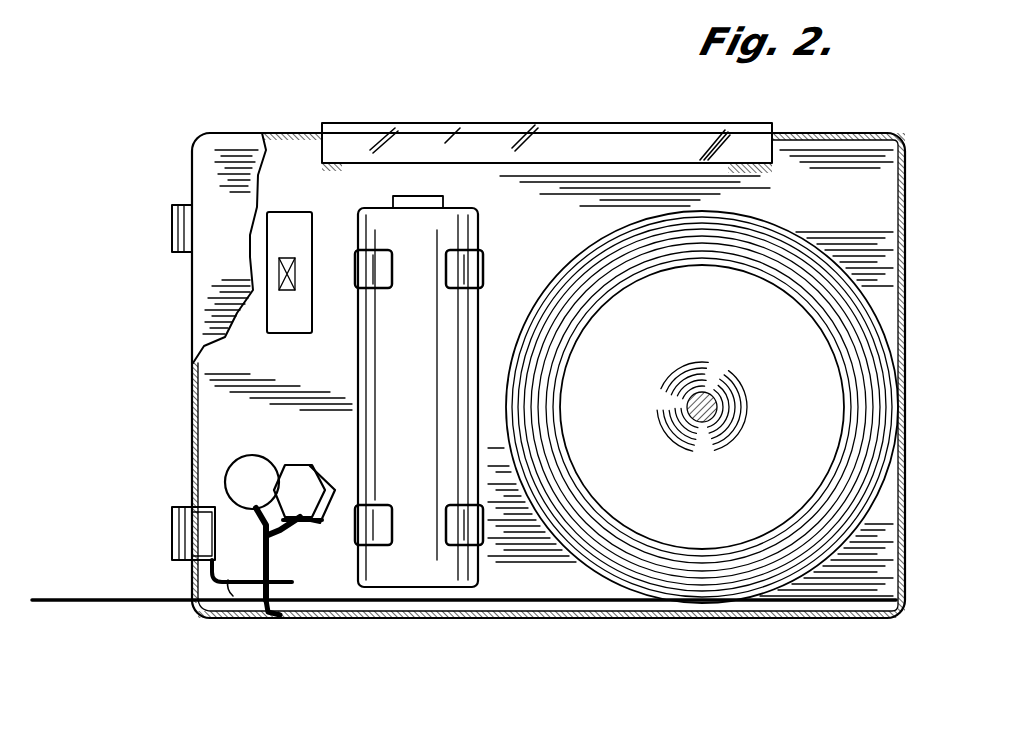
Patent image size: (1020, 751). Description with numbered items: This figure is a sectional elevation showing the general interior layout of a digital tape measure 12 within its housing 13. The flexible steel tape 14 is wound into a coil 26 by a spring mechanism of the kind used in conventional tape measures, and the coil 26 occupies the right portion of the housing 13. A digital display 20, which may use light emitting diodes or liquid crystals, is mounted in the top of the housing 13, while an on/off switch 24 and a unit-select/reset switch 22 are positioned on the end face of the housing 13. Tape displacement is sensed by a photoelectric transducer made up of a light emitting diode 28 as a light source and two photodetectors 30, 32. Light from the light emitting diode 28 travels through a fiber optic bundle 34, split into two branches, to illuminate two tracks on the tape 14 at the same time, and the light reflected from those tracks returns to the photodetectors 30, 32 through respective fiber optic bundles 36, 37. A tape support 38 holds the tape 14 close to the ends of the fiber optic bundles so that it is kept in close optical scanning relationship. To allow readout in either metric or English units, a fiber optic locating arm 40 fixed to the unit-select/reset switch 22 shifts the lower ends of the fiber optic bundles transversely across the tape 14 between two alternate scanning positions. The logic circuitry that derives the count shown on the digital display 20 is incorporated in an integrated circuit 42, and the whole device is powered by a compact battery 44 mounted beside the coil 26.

The measuring device assembly 12 is at (160, 142).
The housing 13 is at (876, 135).
The flexible steel tape 14 is at (75, 603).
The digital display 20 is at (563, 126).
The unit-select/reset switch 22 is at (172, 533).
The on/off switch 24 is at (172, 220).
The coil 26 is at (808, 242).
The light emitting diode 28 is at (237, 455).
The photodetector 30 is at (287, 464).
The photodetector 32 is at (333, 480).
The fiber optic bundle 34 is at (252, 522).
The fiber optic bundle 36 is at (287, 532).
The fiber optic bundle 37 is at (272, 577).
The tape support 38 is at (283, 620).
The fiber optic locating arm 40 is at (237, 592).
The integrated circuit 42 is at (296, 327).
The battery 44 is at (480, 213).